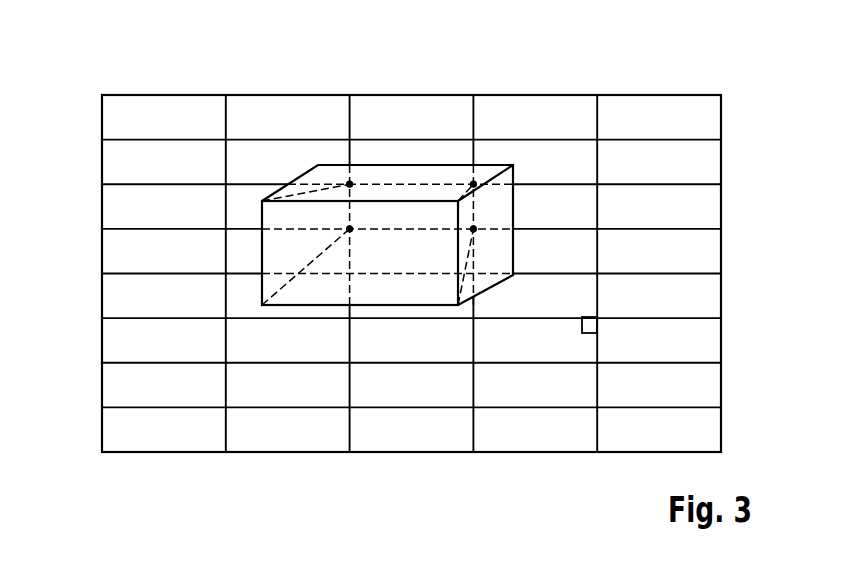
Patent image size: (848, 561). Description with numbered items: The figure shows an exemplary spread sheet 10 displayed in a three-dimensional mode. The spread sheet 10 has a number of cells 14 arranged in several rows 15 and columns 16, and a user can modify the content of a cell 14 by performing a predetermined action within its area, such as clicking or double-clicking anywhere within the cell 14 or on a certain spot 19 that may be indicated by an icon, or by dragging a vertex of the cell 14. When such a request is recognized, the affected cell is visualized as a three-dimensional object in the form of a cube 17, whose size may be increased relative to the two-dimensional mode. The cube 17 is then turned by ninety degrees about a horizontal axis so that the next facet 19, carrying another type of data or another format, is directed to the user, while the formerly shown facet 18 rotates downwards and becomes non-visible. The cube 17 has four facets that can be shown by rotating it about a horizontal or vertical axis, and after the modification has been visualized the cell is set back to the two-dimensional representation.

The spread sheet 10 is at (102, 417).
The cell 14 is at (712, 207).
The rows 15 is at (86, 118).
The columns 16 is at (168, 70).
The 3D-cube 17 is at (503, 207).
The facet 18 is at (272, 221).
The spot / next facet 19 is at (413, 176).